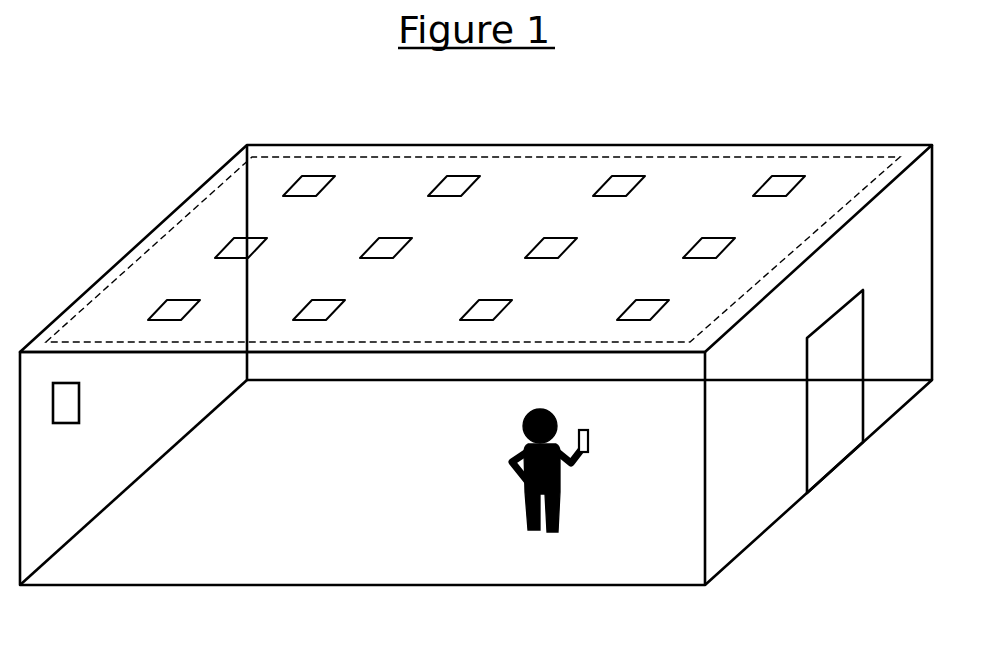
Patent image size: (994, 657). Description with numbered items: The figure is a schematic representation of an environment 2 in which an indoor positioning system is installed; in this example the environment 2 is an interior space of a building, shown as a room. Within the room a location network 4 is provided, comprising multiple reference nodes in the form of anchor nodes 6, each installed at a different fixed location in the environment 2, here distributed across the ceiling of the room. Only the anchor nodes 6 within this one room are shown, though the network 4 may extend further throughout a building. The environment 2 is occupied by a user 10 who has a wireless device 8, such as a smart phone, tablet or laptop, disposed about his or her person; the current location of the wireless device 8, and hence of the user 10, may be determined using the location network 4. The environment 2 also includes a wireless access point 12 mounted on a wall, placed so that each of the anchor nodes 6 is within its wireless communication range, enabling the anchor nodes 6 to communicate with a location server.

The environment 2 is at (755, 145).
The location network 4 is at (585, 145).
The anchor nodes 6 is at (647, 183).
The wireless device 8 is at (590, 437).
The user 10 is at (524, 491).
The wireless access point 12 is at (80, 400).